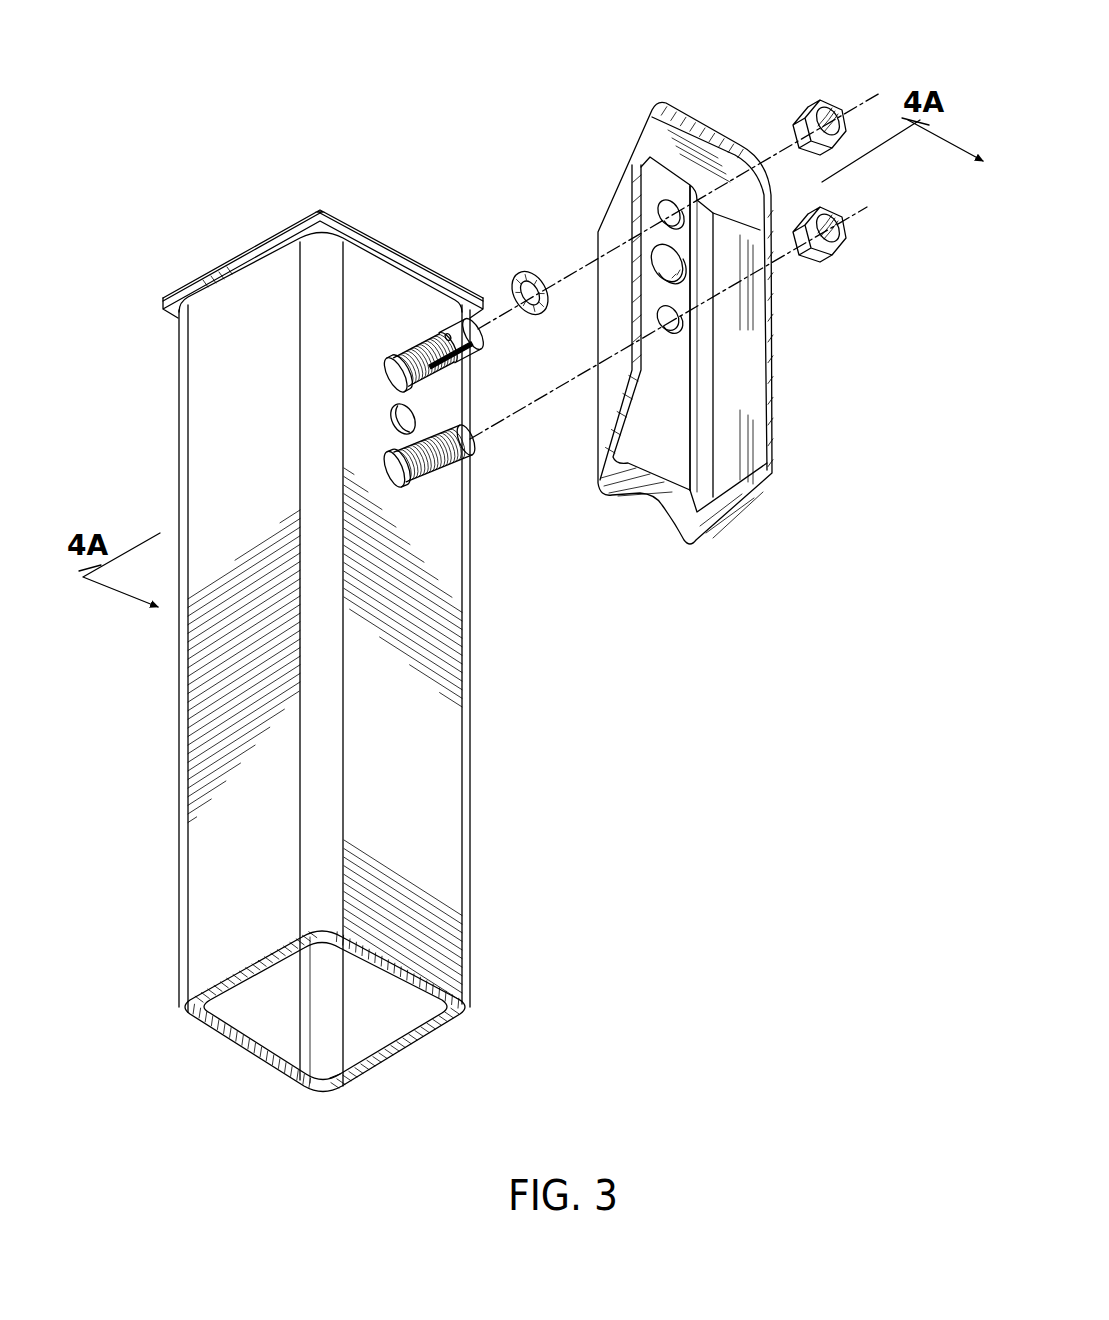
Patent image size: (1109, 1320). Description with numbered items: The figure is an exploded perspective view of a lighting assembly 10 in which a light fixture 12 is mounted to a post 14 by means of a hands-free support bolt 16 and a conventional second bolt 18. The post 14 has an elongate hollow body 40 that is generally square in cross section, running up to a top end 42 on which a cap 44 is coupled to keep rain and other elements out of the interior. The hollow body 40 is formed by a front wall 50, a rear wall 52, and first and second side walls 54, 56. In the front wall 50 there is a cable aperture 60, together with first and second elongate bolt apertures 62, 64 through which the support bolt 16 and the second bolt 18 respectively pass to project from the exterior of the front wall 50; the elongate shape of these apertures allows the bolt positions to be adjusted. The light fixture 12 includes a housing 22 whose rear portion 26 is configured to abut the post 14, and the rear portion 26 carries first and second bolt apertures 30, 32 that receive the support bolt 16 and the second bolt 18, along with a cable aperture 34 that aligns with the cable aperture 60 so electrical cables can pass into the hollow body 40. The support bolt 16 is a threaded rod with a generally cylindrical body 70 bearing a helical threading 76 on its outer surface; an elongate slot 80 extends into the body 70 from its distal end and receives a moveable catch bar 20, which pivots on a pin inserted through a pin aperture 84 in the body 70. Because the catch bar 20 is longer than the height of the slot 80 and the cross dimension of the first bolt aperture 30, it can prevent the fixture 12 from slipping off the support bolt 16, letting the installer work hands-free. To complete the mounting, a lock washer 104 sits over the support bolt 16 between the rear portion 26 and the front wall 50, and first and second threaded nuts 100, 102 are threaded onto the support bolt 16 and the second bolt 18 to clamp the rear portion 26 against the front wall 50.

The lighting assembly 10 is at (201, 160).
The light fixture 12 is at (669, 74).
The post 14 is at (168, 684).
The hands-free support bolt 16 is at (416, 338).
The second bolt 18 is at (442, 476).
The moveable catch bar 20 is at (480, 333).
The housing 22 is at (723, 107).
The rear portion 26 is at (598, 262).
The first bolt aperture 30 is at (680, 213).
The second bolt aperture 32 is at (682, 322).
The cable aperture 34 is at (680, 266).
The elongate hollow body 40 is at (176, 434).
The top end 42 is at (253, 268).
The cap 44 is at (307, 214).
The front wall 50 is at (415, 803).
The rear wall 52 is at (262, 1012).
The first side wall 54 is at (262, 873).
The second side wall 56 is at (394, 998).
The cable aperture 60 is at (391, 421).
The first elongate bolt aperture 62 is at (392, 393).
The second elongate bolt aperture 64 is at (388, 466).
The cylindrical body 70 is at (466, 320).
The helical threading 76 is at (402, 343).
The elongate slot 80 is at (438, 363).
The pin aperture 84 is at (448, 334).
The first threaded nut 100 is at (814, 103).
The second threaded nut 102 is at (828, 256).
The lock washer 104 is at (531, 272).